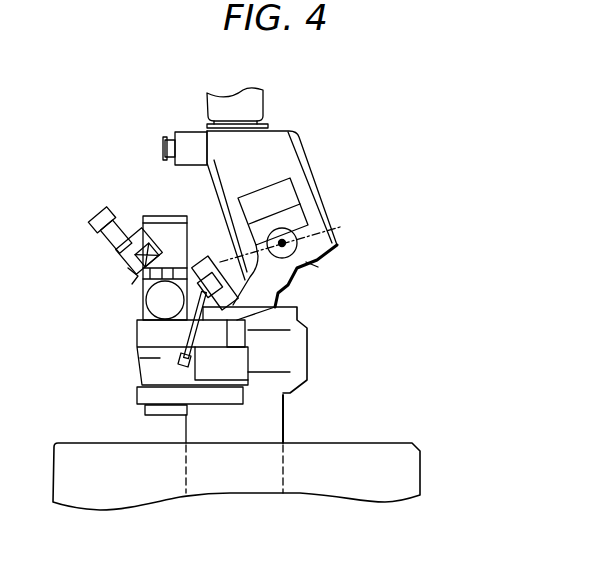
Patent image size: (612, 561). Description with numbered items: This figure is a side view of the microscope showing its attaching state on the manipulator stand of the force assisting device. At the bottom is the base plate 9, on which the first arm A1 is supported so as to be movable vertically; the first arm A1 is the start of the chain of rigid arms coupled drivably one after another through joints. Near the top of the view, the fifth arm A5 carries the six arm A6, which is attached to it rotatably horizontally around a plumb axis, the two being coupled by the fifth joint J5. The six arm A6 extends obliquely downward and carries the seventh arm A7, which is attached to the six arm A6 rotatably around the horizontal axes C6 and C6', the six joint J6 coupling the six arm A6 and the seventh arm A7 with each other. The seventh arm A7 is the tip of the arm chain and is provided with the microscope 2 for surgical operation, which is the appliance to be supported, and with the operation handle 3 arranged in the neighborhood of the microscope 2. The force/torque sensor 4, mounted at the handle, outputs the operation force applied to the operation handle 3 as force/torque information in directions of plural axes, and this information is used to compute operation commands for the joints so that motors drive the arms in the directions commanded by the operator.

The base plate 9 is at (403, 472).
The first arm A1 is at (273, 427).
The operation handle 3 is at (193, 332).
The microscope 2 is at (153, 371).
The force/torque sensor 4 is at (207, 258).
The six arm A6 is at (282, 155).
The seventh arm A7 is at (278, 293).
The six joint J6 is at (307, 248).
The horizontal axis C6 is at (318, 218).
The horizontal axis C6' is at (378, 283).
The fifth arm A5 is at (255, 100).
The fifth joint J5 is at (231, 118).